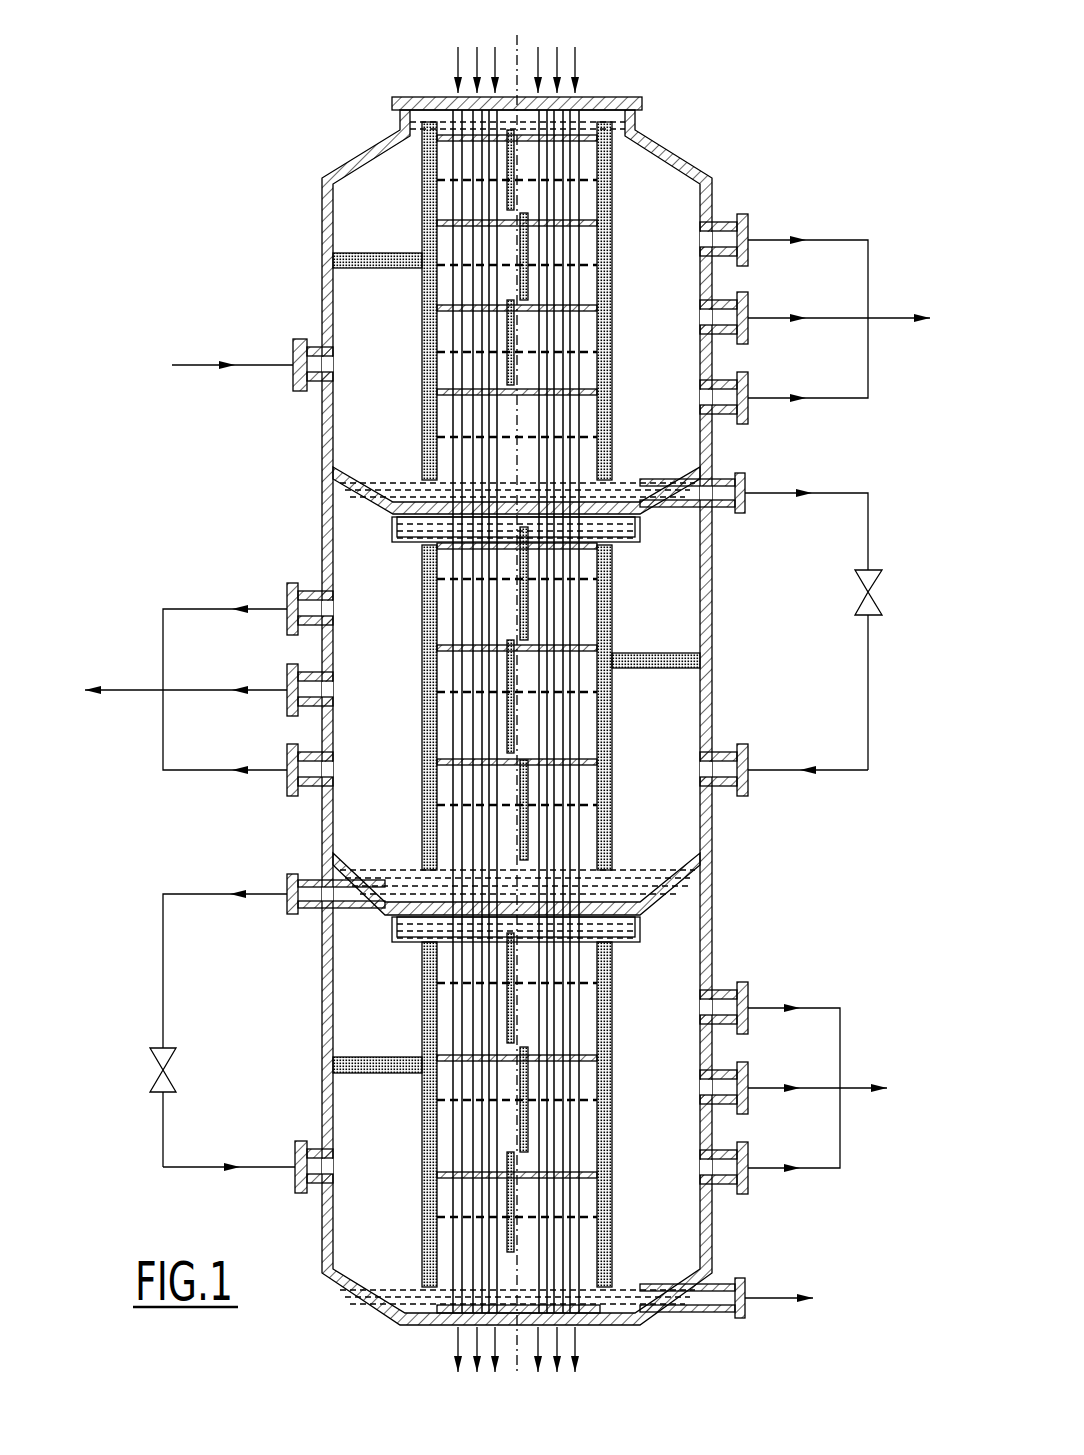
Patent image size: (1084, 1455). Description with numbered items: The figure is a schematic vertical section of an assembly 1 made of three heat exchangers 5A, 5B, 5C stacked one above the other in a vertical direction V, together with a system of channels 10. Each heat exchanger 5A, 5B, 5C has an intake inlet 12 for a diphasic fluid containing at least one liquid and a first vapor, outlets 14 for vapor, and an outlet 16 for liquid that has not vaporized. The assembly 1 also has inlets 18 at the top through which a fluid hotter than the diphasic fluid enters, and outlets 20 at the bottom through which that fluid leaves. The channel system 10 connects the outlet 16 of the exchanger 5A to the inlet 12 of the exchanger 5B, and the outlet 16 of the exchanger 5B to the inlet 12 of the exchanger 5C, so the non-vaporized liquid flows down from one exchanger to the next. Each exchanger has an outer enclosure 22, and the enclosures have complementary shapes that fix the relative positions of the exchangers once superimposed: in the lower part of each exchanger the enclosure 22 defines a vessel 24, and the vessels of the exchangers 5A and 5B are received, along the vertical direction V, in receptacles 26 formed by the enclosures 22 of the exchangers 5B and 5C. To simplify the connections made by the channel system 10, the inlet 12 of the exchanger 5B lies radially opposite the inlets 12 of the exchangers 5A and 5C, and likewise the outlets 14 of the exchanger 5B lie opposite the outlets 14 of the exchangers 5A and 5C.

The assembly 1 is at (205, 100).
The heat exchanger 5A is at (298, 205).
The heat exchanger 5B is at (722, 633).
The heat exchanger 5C is at (312, 1040).
The system of channels 10 is at (872, 675).
The intake inlet 12 is at (293, 357).
The outlets for a vapor 14 is at (746, 243).
The outlet for non-vaporized liquid 16 is at (745, 488).
The inlets 18 is at (588, 62).
The outlets 20 is at (588, 1338).
The outer enclosure 22 is at (322, 518).
The vessel 24 is at (378, 470).
The receptacle 26 is at (662, 518).
The vertical direction V is at (517, 47).